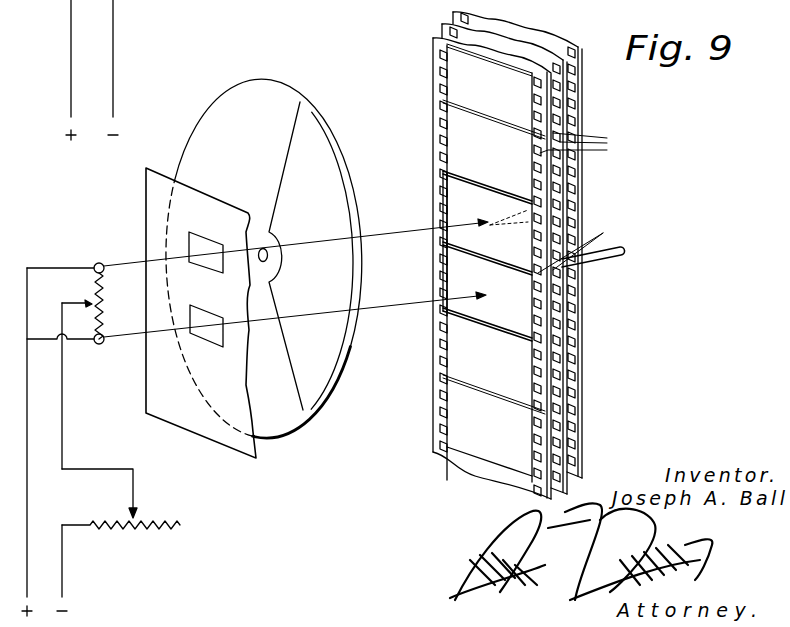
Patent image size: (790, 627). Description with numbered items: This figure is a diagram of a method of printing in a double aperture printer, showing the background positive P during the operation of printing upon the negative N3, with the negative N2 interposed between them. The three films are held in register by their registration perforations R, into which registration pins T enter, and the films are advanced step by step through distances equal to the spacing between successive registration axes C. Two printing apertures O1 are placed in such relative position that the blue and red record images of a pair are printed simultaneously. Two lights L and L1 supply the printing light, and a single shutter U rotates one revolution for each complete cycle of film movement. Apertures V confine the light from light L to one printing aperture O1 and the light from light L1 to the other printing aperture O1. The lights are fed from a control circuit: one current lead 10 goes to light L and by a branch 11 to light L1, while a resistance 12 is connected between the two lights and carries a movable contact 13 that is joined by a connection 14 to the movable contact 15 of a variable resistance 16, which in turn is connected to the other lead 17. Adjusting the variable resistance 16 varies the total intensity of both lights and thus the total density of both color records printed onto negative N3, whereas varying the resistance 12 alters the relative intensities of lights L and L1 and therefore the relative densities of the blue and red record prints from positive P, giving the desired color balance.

The current lead 10 is at (73, 43).
The other lead 17 is at (114, 49).
The branch 11 is at (39, 345).
The resistance 12 is at (104, 313).
The movable contact 13 is at (77, 294).
The connection 14 is at (63, 428).
The movable contact 15 is at (134, 493).
The variable resistance 16 is at (135, 530).
The light L is at (104, 262).
The light L1 is at (97, 345).
The apertures V is at (199, 243).
The shutter U is at (264, 258).
The background positive P is at (433, 418).
The negative N2 is at (568, 210).
The negative N3 is at (582, 118).
The registration axes C is at (442, 99).
The printing apertures O1 is at (460, 193).
The registration perforations R is at (579, 203).
The registration pins T is at (558, 237).